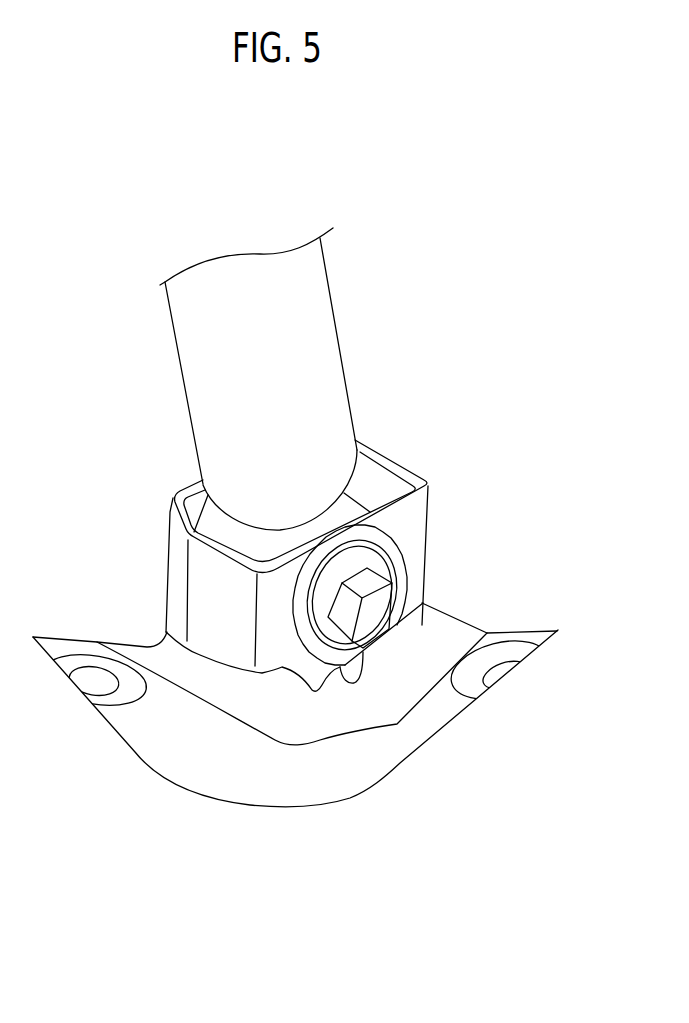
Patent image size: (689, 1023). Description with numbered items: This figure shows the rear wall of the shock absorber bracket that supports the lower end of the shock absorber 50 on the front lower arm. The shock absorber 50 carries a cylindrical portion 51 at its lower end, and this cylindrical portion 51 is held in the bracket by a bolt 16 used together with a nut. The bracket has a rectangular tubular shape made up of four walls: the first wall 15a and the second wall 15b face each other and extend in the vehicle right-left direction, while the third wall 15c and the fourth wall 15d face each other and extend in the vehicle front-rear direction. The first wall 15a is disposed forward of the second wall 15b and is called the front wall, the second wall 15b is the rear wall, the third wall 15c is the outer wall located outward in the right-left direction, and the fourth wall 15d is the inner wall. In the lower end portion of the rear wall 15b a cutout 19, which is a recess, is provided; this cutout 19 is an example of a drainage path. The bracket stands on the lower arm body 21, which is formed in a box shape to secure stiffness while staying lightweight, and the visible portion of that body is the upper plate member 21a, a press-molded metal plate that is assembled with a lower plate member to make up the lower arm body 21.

The shock absorber 50 is at (262, 278).
The cylindrical portion 51 is at (218, 531).
The first wall 15a is at (193, 487).
The second wall 15b is at (415, 522).
The third wall 15c is at (386, 458).
The fourth wall 15d is at (212, 605).
The bolt 16 is at (388, 610).
The cutout 19 is at (346, 682).
The lower arm body 21 is at (380, 780).
The upper plate member 21a is at (233, 768).